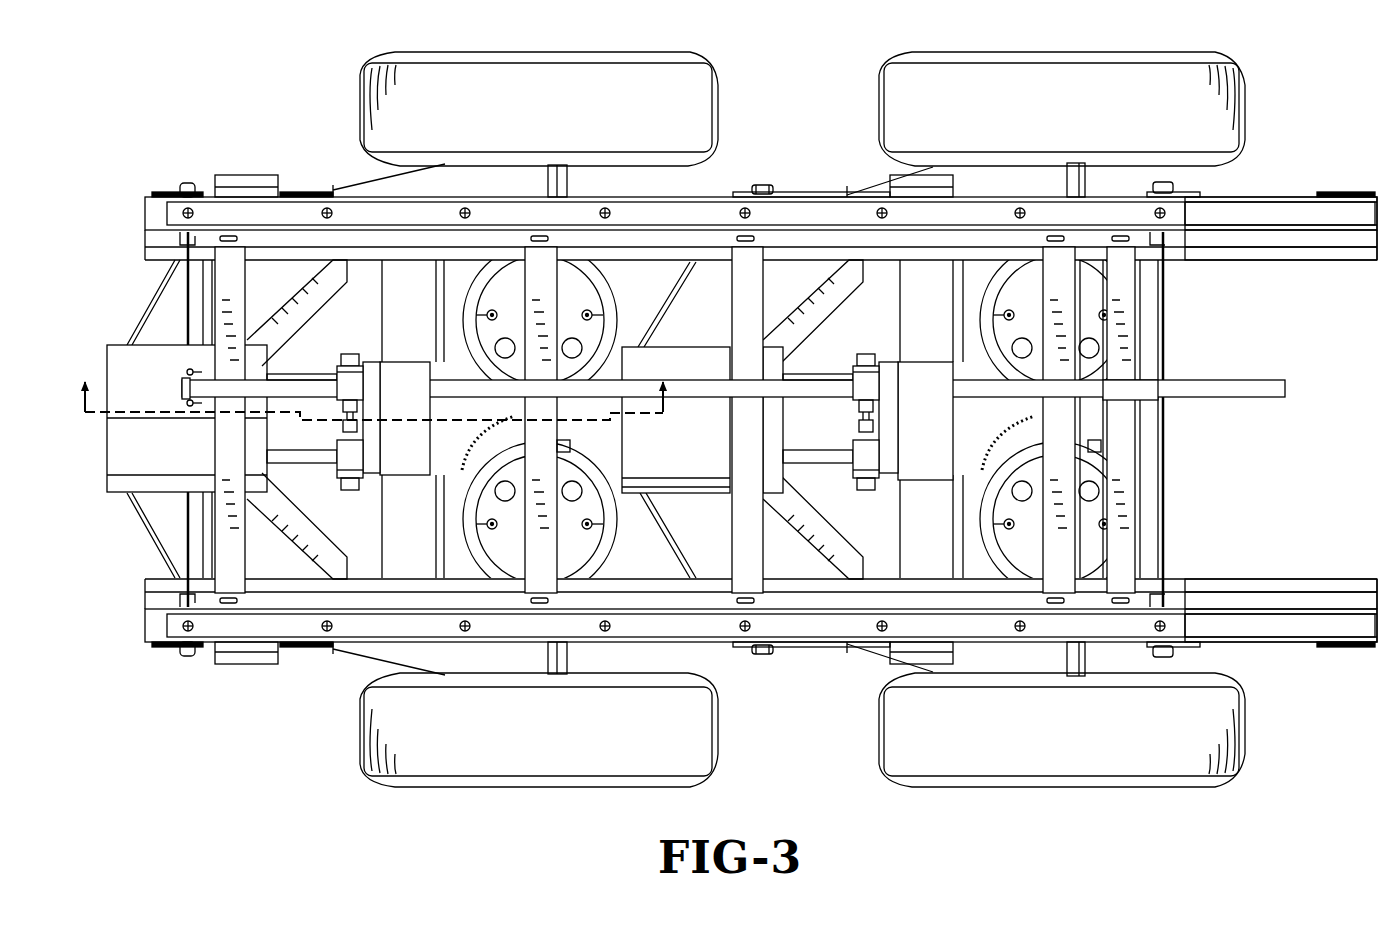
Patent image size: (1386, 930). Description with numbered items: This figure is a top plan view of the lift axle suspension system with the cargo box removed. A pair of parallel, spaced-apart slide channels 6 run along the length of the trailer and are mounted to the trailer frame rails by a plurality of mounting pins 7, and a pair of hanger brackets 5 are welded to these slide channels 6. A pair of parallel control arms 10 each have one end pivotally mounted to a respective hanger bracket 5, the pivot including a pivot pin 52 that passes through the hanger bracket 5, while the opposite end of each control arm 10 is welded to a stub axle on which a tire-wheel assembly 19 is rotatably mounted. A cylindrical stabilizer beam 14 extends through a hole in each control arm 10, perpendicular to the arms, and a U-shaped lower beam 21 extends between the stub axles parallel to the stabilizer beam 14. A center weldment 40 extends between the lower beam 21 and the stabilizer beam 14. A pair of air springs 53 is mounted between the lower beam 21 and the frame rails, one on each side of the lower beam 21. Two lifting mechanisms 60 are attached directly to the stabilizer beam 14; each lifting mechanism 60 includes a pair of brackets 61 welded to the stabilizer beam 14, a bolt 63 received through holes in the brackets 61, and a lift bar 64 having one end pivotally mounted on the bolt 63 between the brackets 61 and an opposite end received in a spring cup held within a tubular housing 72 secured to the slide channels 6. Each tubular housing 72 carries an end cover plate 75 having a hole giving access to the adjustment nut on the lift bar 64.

The hanger bracket 5 is at (838, 670).
The slide channel 6 is at (1265, 197).
The mounting pin 7 is at (186, 183).
The control arm 10 is at (362, 177).
The stabilizer beam 14 is at (397, 300).
The tire-wheel assembly 19 is at (720, 95).
The lower beam 21 is at (572, 447).
The center weldment 40 is at (480, 442).
The pivot pin 52 is at (765, 657).
The air spring 53 is at (603, 283).
The lifting mechanism 60 is at (690, 357).
The bracket 61 is at (371, 362).
The bolt 63 is at (350, 353).
The lift bar 64 is at (300, 376).
The tubular housing 72 is at (133, 468).
The end cover plate 75 is at (103, 356).